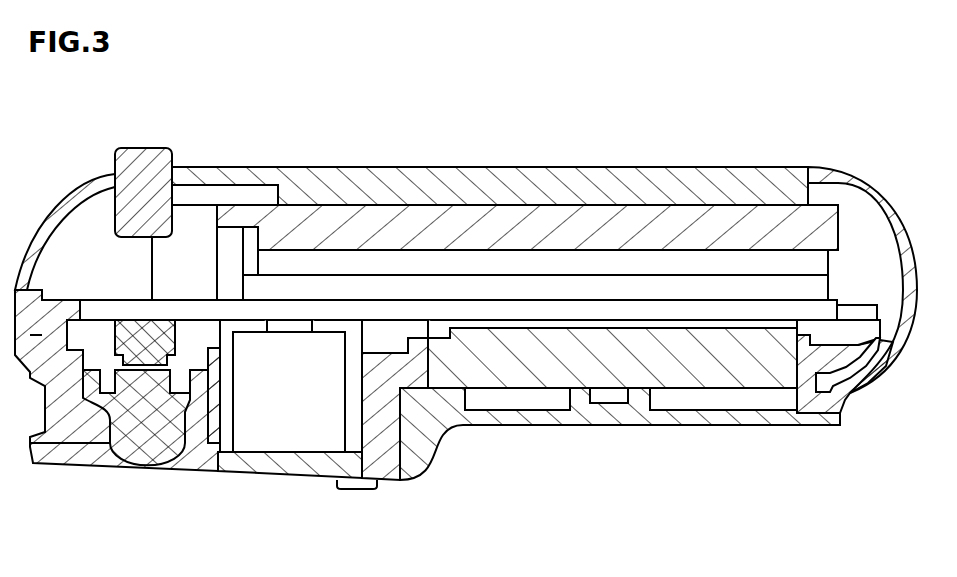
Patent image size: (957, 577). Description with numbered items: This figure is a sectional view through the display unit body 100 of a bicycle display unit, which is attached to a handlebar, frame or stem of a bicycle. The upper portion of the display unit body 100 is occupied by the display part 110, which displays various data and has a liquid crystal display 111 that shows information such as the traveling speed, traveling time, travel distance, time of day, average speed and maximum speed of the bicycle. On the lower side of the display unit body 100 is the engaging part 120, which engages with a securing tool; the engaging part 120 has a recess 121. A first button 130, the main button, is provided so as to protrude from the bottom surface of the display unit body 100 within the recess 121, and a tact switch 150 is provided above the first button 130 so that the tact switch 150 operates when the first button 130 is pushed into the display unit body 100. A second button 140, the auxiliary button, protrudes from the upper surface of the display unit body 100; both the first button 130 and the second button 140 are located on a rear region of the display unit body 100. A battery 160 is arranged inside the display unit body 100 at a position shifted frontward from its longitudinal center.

The display unit body 100 is at (80, 182).
The display part 110 is at (500, 167).
The liquid crystal display 111 is at (670, 228).
The engaging part 120 is at (47, 467).
The recess 121 is at (186, 445).
The first button 130 is at (118, 432).
The second button 140 is at (143, 155).
The tact switch 150 is at (143, 357).
The battery 160 is at (612, 360).